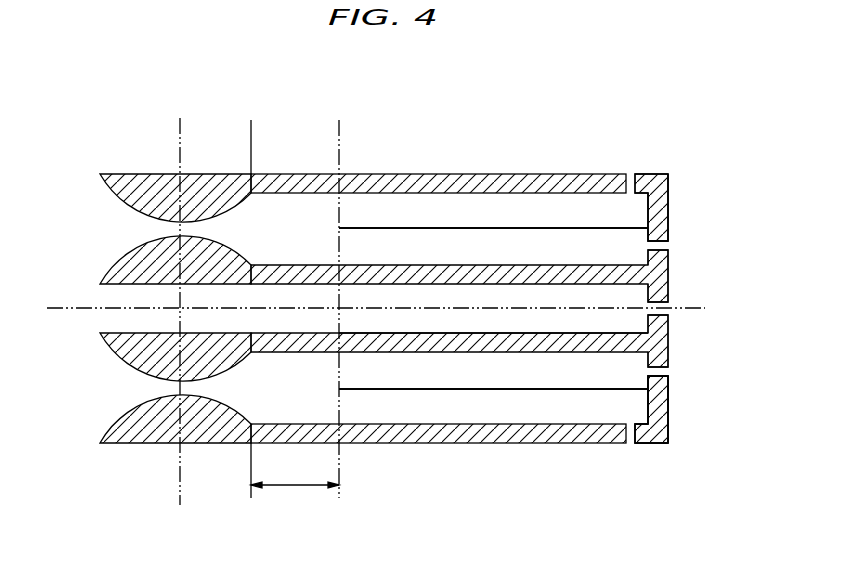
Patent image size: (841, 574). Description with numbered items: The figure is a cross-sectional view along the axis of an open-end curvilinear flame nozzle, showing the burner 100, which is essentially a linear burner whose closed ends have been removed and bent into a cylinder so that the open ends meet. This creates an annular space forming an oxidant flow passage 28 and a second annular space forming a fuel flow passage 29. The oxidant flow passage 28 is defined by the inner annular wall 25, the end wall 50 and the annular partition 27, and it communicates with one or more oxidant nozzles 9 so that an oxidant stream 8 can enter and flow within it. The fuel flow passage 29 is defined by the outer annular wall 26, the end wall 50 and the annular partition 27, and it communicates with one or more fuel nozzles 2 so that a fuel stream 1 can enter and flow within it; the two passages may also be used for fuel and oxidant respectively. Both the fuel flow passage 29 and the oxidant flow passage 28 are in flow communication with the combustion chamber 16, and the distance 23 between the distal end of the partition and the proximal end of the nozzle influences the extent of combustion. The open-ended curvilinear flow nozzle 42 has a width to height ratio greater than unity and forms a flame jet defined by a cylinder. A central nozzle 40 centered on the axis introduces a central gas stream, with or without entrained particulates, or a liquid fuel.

The burner 100 is at (396, 96).
The fuel stream 1 is at (634, 180).
The fuel nozzle 2 is at (645, 182).
The oxidant stream 8 is at (660, 370).
The oxidant nozzle 9 is at (668, 215).
The combustion chamber 16 is at (276, 222).
The distance 23 is at (287, 487).
The inner annular wall 25 is at (549, 268).
The outer annular wall 26 is at (395, 182).
The annular partition 27 is at (500, 228).
The oxidant flow passage 28 is at (430, 238).
The fuel flow passage 29 is at (455, 217).
The central nozzle 40 is at (406, 322).
The open-ended curvilinear flow nozzle 42 is at (157, 231).
The end wall 50 is at (656, 392).